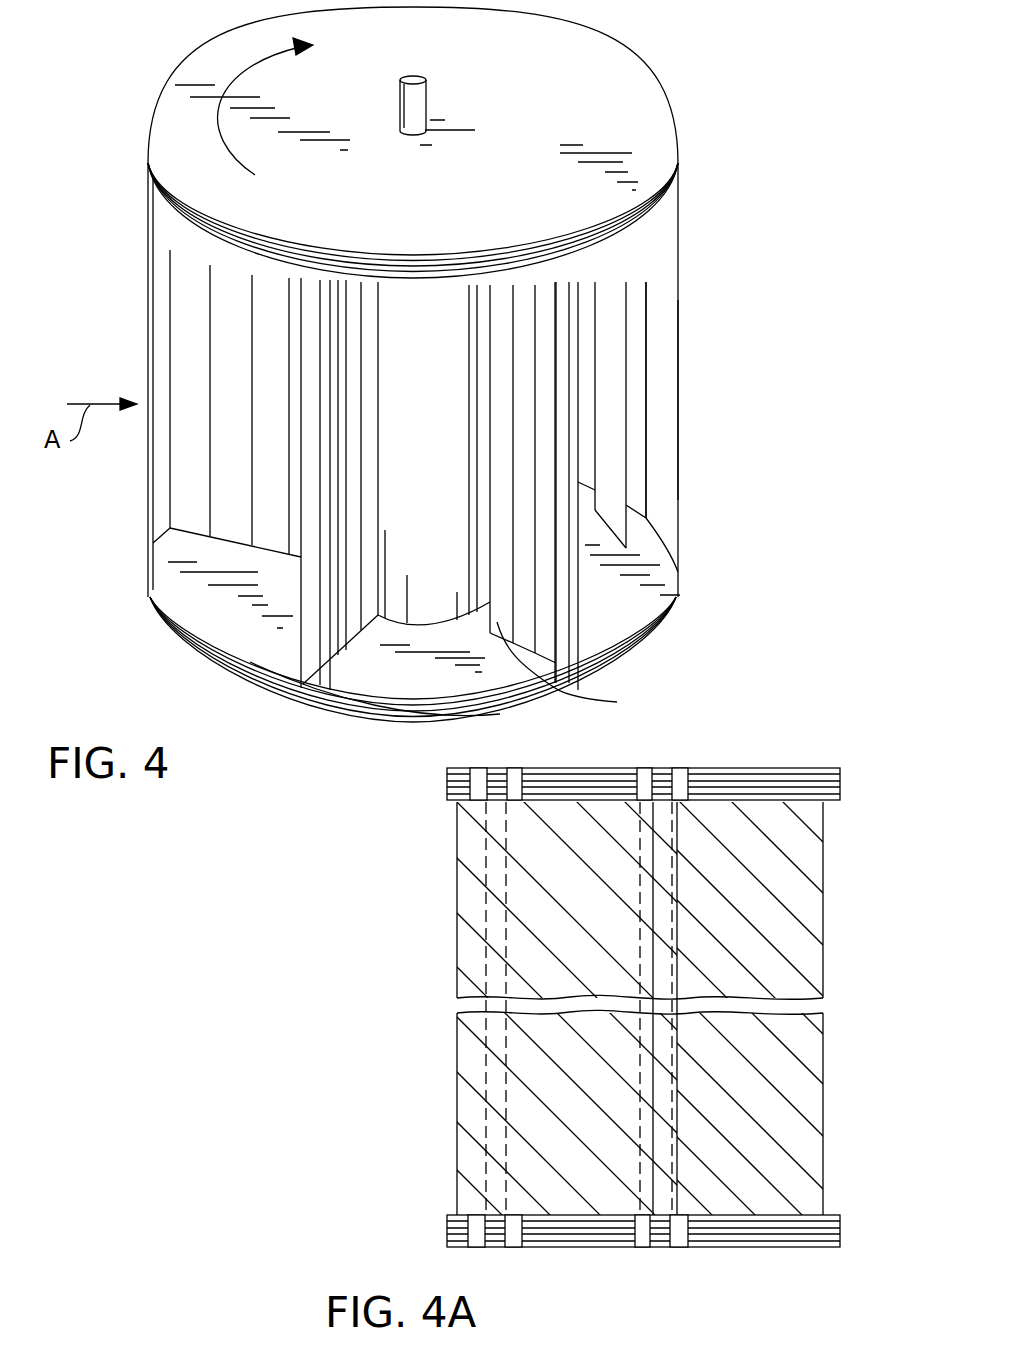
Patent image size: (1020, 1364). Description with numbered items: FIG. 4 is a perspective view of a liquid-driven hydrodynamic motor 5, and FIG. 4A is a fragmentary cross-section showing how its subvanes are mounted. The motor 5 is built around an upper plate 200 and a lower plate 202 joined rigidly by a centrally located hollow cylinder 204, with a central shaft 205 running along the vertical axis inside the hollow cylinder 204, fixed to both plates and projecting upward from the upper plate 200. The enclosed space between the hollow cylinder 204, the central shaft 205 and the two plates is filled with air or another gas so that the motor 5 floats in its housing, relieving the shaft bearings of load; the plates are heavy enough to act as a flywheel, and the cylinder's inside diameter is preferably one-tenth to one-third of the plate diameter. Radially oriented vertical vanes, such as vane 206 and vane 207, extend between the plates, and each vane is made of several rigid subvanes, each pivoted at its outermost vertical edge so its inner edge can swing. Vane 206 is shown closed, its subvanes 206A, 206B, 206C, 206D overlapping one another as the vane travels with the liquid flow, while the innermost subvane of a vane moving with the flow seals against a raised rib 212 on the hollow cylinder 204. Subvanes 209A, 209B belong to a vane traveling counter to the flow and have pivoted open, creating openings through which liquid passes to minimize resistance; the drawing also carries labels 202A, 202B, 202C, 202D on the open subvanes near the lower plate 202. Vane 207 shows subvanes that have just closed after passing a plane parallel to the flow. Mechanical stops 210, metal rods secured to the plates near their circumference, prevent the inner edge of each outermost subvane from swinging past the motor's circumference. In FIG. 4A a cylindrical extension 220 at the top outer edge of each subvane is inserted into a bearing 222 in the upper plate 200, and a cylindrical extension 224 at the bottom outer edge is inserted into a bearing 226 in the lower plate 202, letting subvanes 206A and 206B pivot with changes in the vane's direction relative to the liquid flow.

In FIG. 4, the hydrodynamic motor 5 is at (580, 38).
In FIG. 4A, the hydrodynamic motor 5 is at (735, 766).
In FIG. 4, the upper plate 200 is at (640, 100).
In FIG. 4A, the upper plate 200 is at (618, 807).
In FIG. 4, the lower plate 202 is at (469, 637).
In FIG. 4A, the lower plate 202 is at (603, 1268).
In FIG. 4, the bottom plate layer 202A is at (550, 620).
In FIG. 4, the bottom plate layer 202B is at (555, 612).
In FIG. 4, the bottom plate layer 202C is at (528, 629).
In FIG. 4, the bottom plate layer 202D is at (555, 688).
In FIG. 4, the hollow cylinder 204 is at (435, 600).
In FIG. 4, the central shaft 205 is at (428, 95).
In FIG. 4, the vane 206 is at (169, 444).
In FIG. 4, the outermost subvane 206A is at (174, 246).
In FIG. 4A, the outermost subvane 206A is at (533, 1131).
In FIG. 4, the subvane 206B is at (212, 276).
In FIG. 4A, the subvane 206B is at (772, 1131).
In FIG. 4, the subvane 206C is at (265, 313).
In FIG. 4, the innermost subvane 206D is at (290, 365).
In FIG. 4, the vane 207 is at (297, 648).
In FIG. 4, the outermost subvane 209A is at (680, 372).
In FIG. 4, the subvane 209B is at (620, 298).
In FIG. 4, the mechanical stop 210 is at (150, 506).
In FIG. 4, the raised rib 212 is at (468, 318).
In FIG. 4A, the cylindrical extension 220 is at (652, 770).
In FIG. 4A, the bearing 222 is at (637, 770).
In FIG. 4A, the cylindrical extension 224 is at (490, 1240).
In FIG. 4A, the bearing 226 is at (518, 1247).